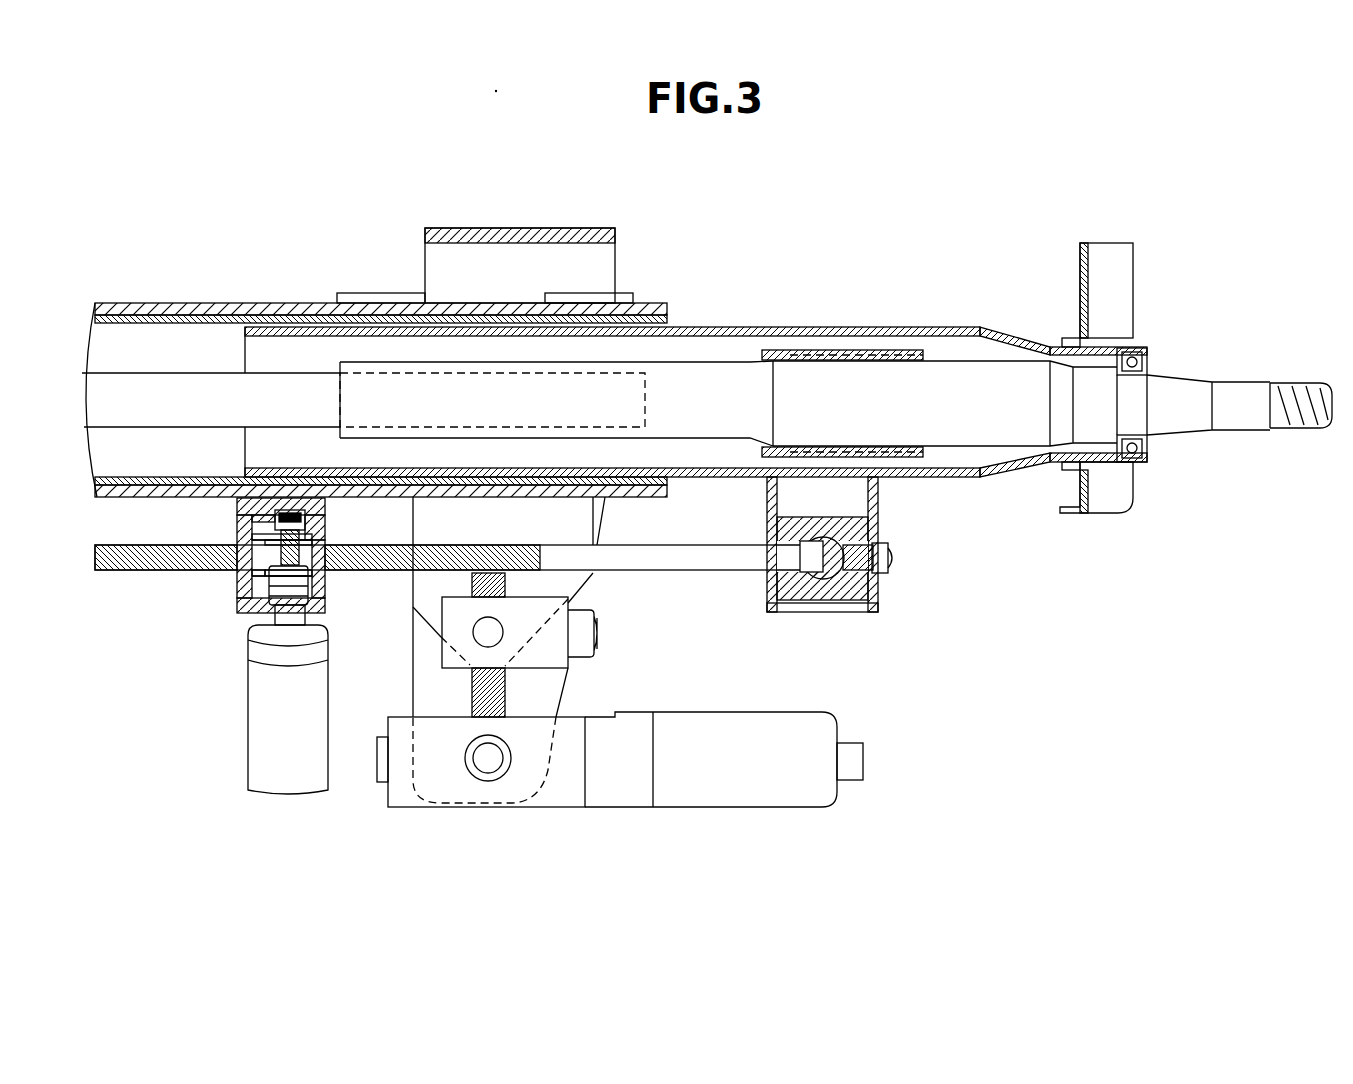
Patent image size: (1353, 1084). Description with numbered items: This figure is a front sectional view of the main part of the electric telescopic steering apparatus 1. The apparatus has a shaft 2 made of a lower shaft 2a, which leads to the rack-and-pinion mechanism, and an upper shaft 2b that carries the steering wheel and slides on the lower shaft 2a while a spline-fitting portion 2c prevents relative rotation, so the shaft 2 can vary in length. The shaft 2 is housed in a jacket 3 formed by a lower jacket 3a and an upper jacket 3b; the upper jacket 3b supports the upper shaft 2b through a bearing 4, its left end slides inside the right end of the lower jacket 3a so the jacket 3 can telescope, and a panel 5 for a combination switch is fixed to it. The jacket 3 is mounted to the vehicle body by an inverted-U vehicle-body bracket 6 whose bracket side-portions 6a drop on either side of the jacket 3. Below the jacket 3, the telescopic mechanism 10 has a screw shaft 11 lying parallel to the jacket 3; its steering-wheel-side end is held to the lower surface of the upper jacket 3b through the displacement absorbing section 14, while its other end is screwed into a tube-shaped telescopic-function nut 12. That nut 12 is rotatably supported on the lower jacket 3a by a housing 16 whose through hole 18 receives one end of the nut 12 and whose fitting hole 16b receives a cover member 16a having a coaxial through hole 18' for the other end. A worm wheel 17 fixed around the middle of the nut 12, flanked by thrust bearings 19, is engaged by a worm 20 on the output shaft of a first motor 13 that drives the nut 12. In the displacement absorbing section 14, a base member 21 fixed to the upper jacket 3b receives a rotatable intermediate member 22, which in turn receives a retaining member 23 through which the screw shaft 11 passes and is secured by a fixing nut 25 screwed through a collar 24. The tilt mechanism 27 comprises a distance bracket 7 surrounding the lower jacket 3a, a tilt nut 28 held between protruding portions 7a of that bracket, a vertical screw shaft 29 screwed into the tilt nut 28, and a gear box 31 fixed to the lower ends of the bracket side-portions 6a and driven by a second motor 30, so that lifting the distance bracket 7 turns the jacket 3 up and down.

The steering apparatus 1 is at (868, 270).
The shaft 2 is at (250, 203).
The lower shaft 2a is at (283, 383).
The upper shaft 2b is at (370, 360).
The spline-fitting portion 2c is at (488, 360).
The jacket 3 is at (723, 213).
The lower jacket 3a is at (705, 326).
The upper jacket 3b is at (828, 328).
The bearing 4 is at (1133, 348).
The panel 5 is at (1127, 262).
The vehicle-body bracket 6 is at (540, 228).
The bracket side-portions 6a is at (410, 685).
The distance bracket 7 is at (215, 303).
The protruding portions 7a is at (600, 528).
The telescopic mechanism 10 is at (189, 670).
The screw shaft 11 is at (718, 570).
The telescopic-function nut 12 is at (243, 620).
The first motor 13 is at (285, 787).
The displacement absorbing section 14 is at (842, 652).
The housing 16 is at (322, 608).
The cover member 16a is at (237, 602).
The fitting hole 16b is at (310, 516).
The worm wheel 17 is at (255, 541).
The through hole 18 is at (337, 557).
The through hole 18' is at (188, 587).
The thrust bearings 19 is at (290, 512).
The worm 20 is at (308, 604).
The base member 21 is at (880, 487).
The intermediate member 22 is at (863, 525).
The retaining member 23 is at (830, 590).
The collar 24 is at (855, 575).
The fixing nut 25 is at (890, 560).
The tilt mechanism 27 is at (606, 838).
The tilt nut 28 is at (562, 645).
The screw shaft 29 is at (505, 690).
The second motor 30 is at (727, 800).
The gear box 31 is at (560, 797).